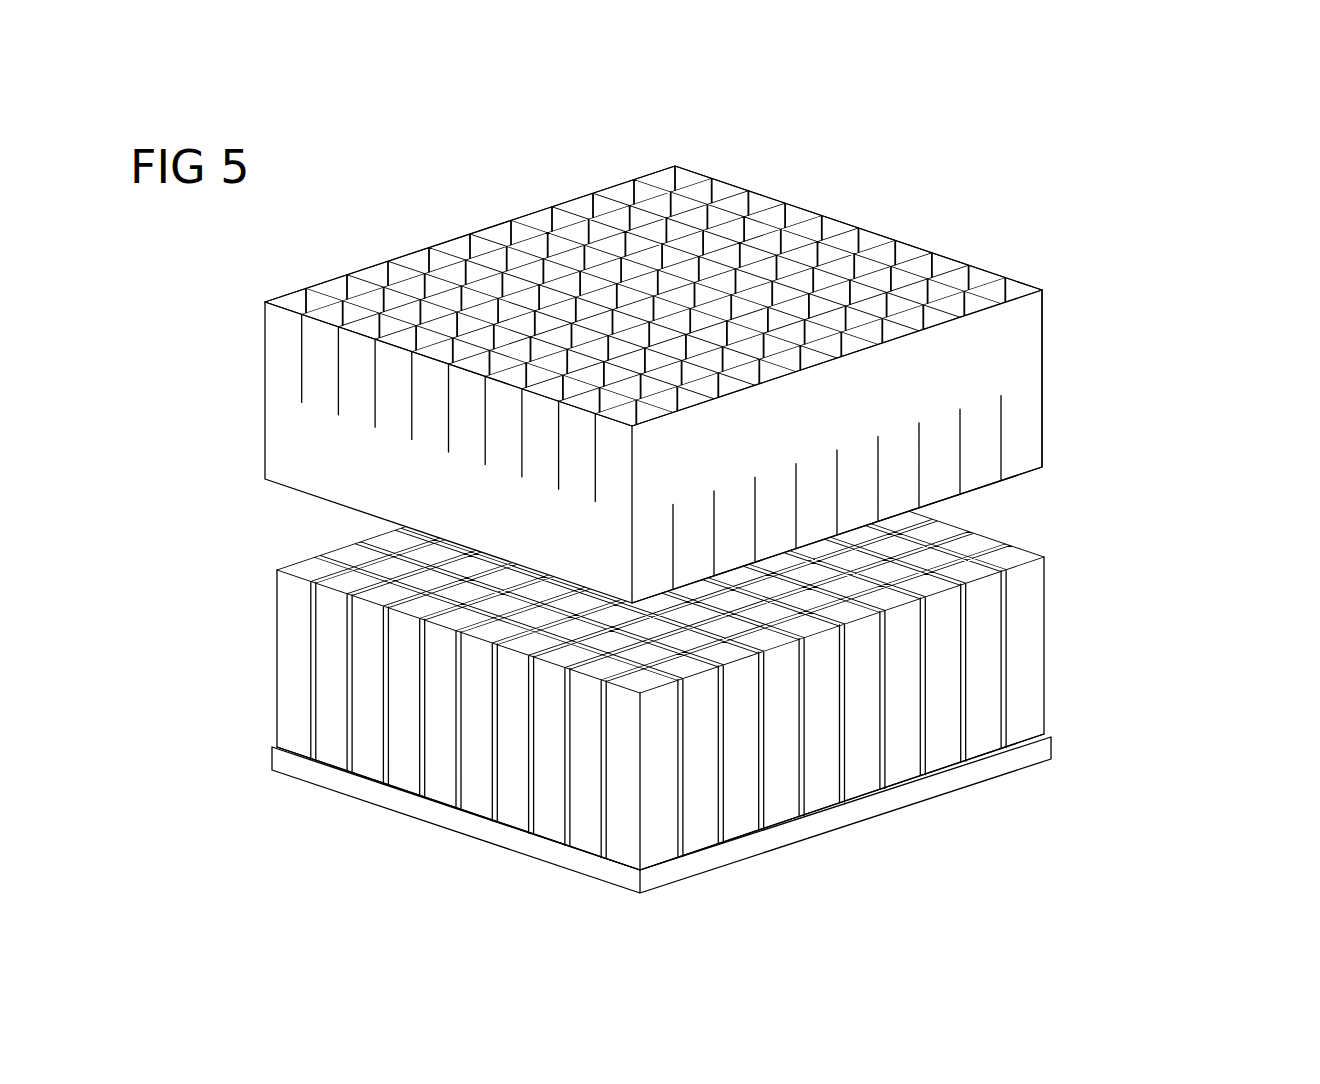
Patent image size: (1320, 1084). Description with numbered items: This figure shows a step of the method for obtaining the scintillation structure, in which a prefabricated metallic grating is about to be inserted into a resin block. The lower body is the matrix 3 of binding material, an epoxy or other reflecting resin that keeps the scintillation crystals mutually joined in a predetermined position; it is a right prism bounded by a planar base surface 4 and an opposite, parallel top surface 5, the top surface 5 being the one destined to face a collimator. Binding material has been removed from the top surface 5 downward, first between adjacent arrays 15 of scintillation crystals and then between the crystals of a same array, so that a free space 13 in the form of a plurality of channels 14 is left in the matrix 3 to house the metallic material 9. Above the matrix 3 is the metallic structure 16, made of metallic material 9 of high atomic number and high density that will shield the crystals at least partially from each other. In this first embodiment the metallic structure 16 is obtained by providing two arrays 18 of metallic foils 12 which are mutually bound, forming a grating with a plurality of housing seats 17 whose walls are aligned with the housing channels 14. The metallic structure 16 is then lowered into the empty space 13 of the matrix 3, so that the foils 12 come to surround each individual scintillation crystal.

The binding material matrix 3 is at (692, 676).
The base surface 4 is at (661, 815).
The top surface 5 is at (660, 563).
The metallic material 9 is at (711, 358).
The metallic foils 12 is at (715, 367).
The free space 13 is at (658, 714).
The channels 14 is at (660, 802).
The arrays of scintillation crystals 15 is at (842, 714).
The metallic structure 16 is at (1024, 337).
The housing seats 17 is at (410, 340).
The arrays of metallic foils 18 is at (608, 182).